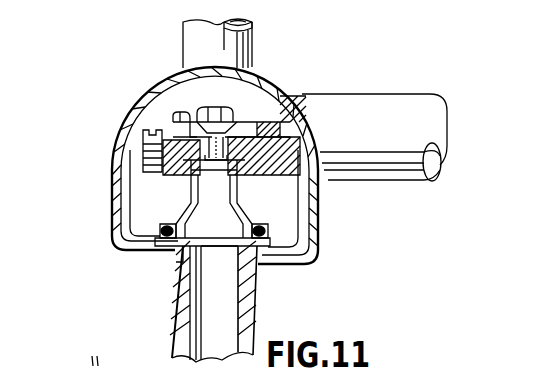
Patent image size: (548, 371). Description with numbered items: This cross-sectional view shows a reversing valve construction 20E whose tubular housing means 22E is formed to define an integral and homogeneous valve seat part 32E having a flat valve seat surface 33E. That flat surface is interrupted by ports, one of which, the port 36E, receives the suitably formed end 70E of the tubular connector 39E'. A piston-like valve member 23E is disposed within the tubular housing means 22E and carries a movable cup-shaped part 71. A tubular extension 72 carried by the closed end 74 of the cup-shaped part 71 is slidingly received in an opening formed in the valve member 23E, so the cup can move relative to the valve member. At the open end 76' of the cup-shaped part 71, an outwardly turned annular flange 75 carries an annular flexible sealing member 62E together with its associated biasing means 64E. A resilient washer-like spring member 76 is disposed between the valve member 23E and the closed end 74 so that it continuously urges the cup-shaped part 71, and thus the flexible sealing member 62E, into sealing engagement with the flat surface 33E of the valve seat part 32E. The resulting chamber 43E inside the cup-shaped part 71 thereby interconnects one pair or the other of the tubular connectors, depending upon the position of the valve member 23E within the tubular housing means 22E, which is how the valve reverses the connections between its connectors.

The reversing valve construction 20E is at (372, 54).
The tubular housing means 22E is at (137, 104).
The chamber 43E is at (322, 152).
The valve member 23E is at (310, 195).
The tubular extension 72 is at (259, 156).
The resilient washer like spring member 76 is at (307, 135).
The closed end 74 is at (150, 176).
The cup-shaped part 71 is at (142, 205).
The outwardly turned annular flange 75 is at (286, 216).
The flat valve seat surface 33E is at (152, 230).
The end of tubular connector 70E is at (214, 199).
The annular flexible sealing member 62E is at (170, 252).
The biasing means 64E is at (270, 238).
The valve seat part 32E is at (286, 269).
The port 36E is at (192, 268).
The tubular connector 39E' is at (256, 301).
The open end 76' is at (175, 292).